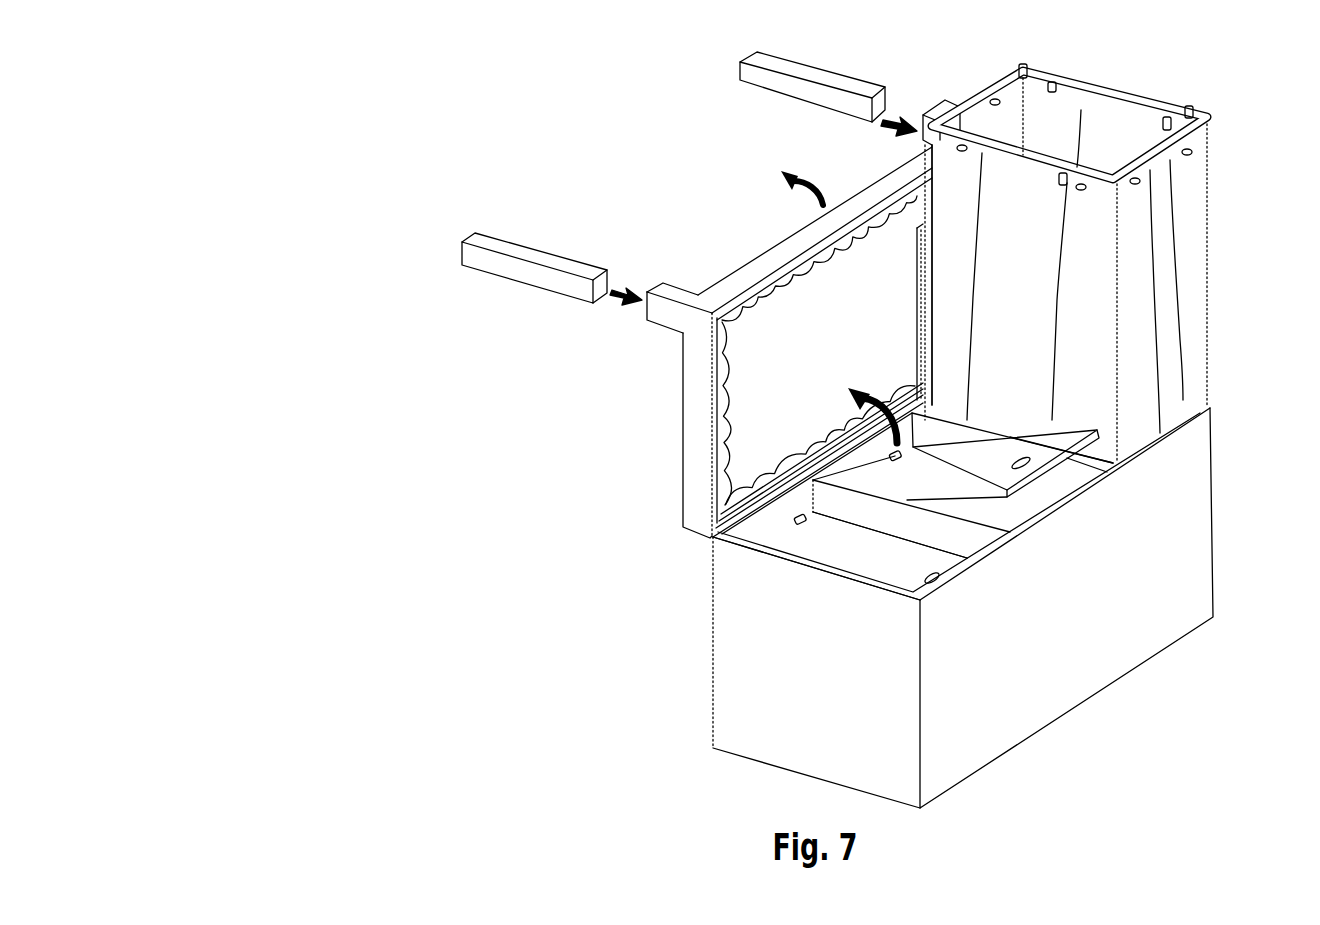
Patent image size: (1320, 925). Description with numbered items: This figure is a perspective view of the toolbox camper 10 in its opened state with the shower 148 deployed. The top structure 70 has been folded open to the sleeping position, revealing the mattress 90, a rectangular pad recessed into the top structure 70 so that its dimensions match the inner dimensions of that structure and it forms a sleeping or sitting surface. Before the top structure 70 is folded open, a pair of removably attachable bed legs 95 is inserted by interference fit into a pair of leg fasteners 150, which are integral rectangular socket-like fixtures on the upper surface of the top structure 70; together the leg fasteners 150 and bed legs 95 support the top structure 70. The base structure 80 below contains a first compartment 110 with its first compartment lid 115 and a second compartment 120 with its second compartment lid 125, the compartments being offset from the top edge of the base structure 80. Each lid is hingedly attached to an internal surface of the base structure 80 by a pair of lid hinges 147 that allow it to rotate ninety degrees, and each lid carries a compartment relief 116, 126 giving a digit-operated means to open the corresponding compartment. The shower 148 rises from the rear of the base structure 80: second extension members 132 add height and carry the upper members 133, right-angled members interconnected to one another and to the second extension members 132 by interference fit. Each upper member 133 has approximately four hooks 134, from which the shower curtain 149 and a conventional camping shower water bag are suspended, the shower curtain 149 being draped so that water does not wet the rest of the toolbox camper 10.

The toolbox camper 10 is at (320, 152).
The top structure 70 is at (748, 277).
The base structure 80 is at (1123, 652).
The mattress 90 is at (757, 403).
The bed legs 95 is at (755, 73).
The first compartment 110 is at (750, 542).
The first compartment lid 115 is at (885, 558).
The compartment relief 116 is at (934, 584).
The second compartment 120 is at (1083, 475).
The second compartment lid 125 is at (1055, 462).
The compartment relief 126 is at (1020, 458).
The second extension member 132 is at (1025, 118).
The upper members 133 is at (995, 80).
The hooks 134 is at (963, 143).
The lid hinges 147 is at (893, 460).
The shower 148 is at (1149, 89).
The shower curtain 149 is at (1003, 112).
The leg fasteners 150 is at (942, 110).